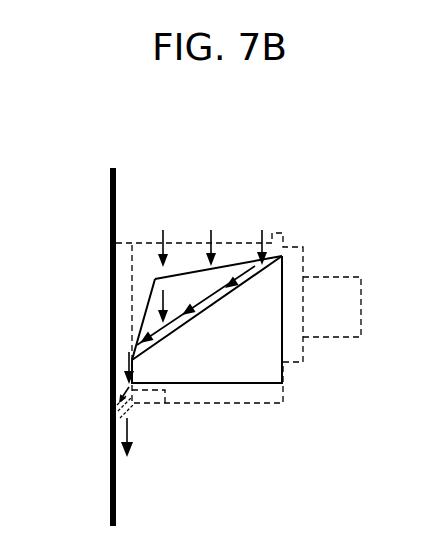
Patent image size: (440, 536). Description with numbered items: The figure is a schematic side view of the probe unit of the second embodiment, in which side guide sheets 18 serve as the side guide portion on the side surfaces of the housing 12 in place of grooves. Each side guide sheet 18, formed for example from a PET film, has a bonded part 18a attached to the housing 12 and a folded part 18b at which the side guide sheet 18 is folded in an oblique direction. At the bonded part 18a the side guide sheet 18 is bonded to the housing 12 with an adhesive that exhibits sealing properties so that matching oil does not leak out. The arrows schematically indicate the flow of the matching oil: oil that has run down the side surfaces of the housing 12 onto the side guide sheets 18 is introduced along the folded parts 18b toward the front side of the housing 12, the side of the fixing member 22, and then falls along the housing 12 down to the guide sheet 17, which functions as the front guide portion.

The housing 12 is at (235, 250).
The guide sheet 17 is at (135, 412).
The side guide sheet 18 is at (217, 285).
The bonded part 18a is at (248, 355).
The folded part 18b is at (182, 330).
The fixing member 22 is at (110, 462).